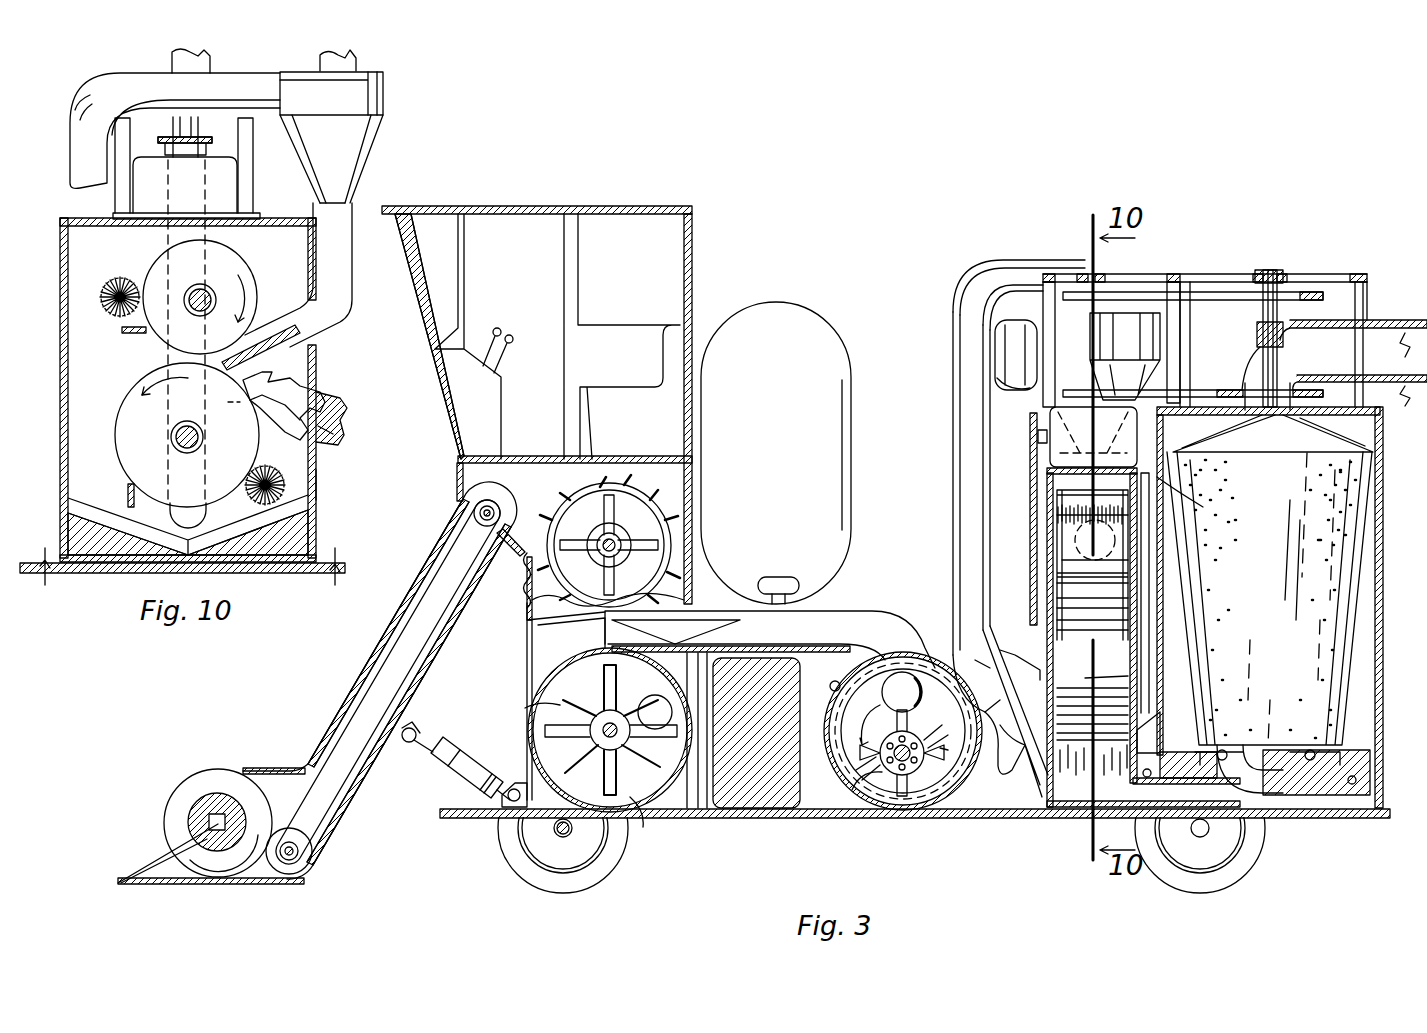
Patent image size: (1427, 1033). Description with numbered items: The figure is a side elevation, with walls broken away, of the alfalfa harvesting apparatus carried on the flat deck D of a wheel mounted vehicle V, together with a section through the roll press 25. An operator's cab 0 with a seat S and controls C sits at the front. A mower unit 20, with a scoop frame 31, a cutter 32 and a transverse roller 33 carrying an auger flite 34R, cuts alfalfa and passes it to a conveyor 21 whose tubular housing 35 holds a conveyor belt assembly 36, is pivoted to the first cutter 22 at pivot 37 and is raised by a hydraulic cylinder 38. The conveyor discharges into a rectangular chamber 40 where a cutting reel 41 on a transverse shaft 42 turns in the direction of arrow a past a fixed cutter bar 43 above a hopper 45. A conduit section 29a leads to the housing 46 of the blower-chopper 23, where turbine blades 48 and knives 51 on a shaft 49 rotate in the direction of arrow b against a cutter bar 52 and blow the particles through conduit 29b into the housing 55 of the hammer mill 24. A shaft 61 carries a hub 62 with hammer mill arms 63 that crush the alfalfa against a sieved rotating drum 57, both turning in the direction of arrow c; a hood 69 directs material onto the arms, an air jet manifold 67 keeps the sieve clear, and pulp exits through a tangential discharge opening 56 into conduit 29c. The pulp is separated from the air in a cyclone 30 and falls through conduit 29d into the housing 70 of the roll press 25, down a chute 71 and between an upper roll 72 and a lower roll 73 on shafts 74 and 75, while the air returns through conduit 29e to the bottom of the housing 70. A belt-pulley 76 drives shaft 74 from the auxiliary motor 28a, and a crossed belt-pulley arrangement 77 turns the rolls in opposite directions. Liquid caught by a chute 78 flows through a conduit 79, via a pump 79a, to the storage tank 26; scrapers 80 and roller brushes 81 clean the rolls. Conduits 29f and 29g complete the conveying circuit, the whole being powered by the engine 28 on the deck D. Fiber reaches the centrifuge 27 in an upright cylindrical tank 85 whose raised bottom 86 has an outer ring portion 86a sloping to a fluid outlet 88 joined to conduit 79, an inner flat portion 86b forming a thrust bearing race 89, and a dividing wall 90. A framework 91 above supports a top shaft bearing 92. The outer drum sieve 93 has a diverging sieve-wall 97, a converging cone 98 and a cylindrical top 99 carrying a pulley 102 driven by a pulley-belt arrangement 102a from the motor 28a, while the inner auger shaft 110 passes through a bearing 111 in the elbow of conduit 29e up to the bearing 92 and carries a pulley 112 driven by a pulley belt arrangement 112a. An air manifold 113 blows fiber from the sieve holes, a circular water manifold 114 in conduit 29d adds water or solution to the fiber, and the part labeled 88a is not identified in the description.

In FIG. 3, the vehicle body 0 is at (650, 206).
In FIG. 3, the lower conveyor housing 20 is at (202, 827).
In FIG. 3, the conveyor 21 is at (380, 680).
In FIG. 3, the rotor compartment 22 is at (701, 484).
In FIG. 3, the blower fan 23 is at (572, 730).
In FIG. 3, the blower 24 is at (891, 749).
In FIG. 10, the duct outlet 25 is at (318, 474).
In FIG. 3, the duct outlet 25 is at (1043, 797).
In FIG. 3, the tank 26 is at (840, 360).
In FIG. 3, the collecting container 27 is at (1316, 574).
In FIG. 3, the engine block 28 is at (765, 800).
In FIG. 10, the housing 28a is at (222, 190).
In FIG. 3, the housing 28a is at (1060, 447).
In FIG. 3, the inlet 29a is at (658, 696).
In FIG. 3, the pipe 29b is at (820, 638).
In FIG. 10, the pipe 29c is at (72, 137).
In FIG. 3, the pipe 29c is at (1005, 352).
In FIG. 10, the pipe 29d is at (335, 290).
In FIG. 10, the pipe outlet 29e is at (170, 57).
In FIG. 3, the pipe outlet 29e is at (960, 306).
In FIG. 3, the elbow pipe 29f is at (1262, 745).
In FIG. 3, the pipe 29g is at (1350, 320).
In FIG. 10, the cyclone separator 30 is at (380, 94).
In FIG. 3, the cyclone separator 30 is at (1120, 335).
In FIG. 3, the bottom plate 31 is at (205, 884).
In FIG. 3, the support struts 32 is at (124, 880).
In FIG. 3, the hub 33 is at (192, 813).
In FIG. 3, the roller 34R is at (190, 790).
In FIG. 3, the conveyor frame 35 is at (395, 638).
In FIG. 3, the frame bend 36 is at (342, 730).
In FIG. 3, the upper pulley 37 is at (480, 510).
In FIG. 3, the hydraulic cylinder 38 is at (462, 772).
In FIG. 3, the rotor 40 is at (643, 534).
In FIG. 3, the rotor blades 41 is at (615, 480).
In FIG. 3, the rotor shaft 42 is at (620, 540).
In FIG. 3, the deflector 43 is at (524, 580).
In FIG. 3, the blower housing 45 is at (560, 632).
In FIG. 3, the cylinder bracket 46 is at (522, 786).
In FIG. 3, the fan blade 48 is at (618, 778).
In FIG. 3, the fan blade 49 is at (590, 736).
In FIG. 3, the fan housing wall 51 is at (535, 722).
In FIG. 3, the fan blade 52 is at (668, 736).
In FIG. 3, the blower inlet 55 is at (860, 667).
In FIG. 3, the blower housing 56 is at (939, 806).
In FIG. 3, the blower casing 57 is at (935, 790).
In FIG. 3, the rotor disc 61 is at (892, 745).
In FIG. 3, the rotor arm 62 is at (940, 755).
In FIG. 3, the vane 63 is at (852, 790).
In FIG. 3, the pivot 67 is at (831, 688).
In FIG. 3, the vane 69 is at (873, 711).
In FIG. 10, the filter box 70 is at (316, 360).
In FIG. 3, the filter box 70 is at (1140, 724).
In FIG. 10, the guide plate 71 is at (258, 352).
In FIG. 10, the upper roller 72 is at (222, 268).
In FIG. 3, the upper roller 72 is at (1057, 540).
In FIG. 10, the lower roller 73 is at (130, 408).
In FIG. 3, the lower roller 73 is at (1092, 661).
In FIG. 10, the roller shaft 74 is at (203, 292).
In FIG. 3, the roller shaft 74 is at (1062, 560).
In FIG. 10, the roller shaft 75 is at (203, 440).
In FIG. 3, the roller shaft 75 is at (1096, 675).
In FIG. 3, the strip 76 is at (1030, 486).
In FIG. 3, the strip 77 is at (1150, 610).
In FIG. 10, the bracket 78 is at (290, 420).
In FIG. 10, the hook 79 is at (342, 418).
In FIG. 3, the hook 79 is at (945, 628).
In FIG. 3, the cap 79a is at (794, 578).
In FIG. 10, the scraper bar 80 is at (130, 333).
In FIG. 3, the scraper bar 80 is at (1055, 600).
In FIG. 10, the brush 81 is at (115, 278).
In FIG. 3, the brush 81 is at (1057, 512).
In FIG. 3, the outer wall 85 is at (1383, 590).
In FIG. 3, the base block 86 is at (1325, 800).
In FIG. 3, the base block part 86a is at (1355, 800).
In FIG. 3, the base block part 86b is at (1285, 798).
In FIG. 3, the pin 88 is at (1358, 778).
In FIG. 3, the bracket 88a is at (1052, 672).
In FIG. 3, the pivot 89 is at (1225, 750).
In FIG. 3, the pivot 90 is at (1345, 752).
In FIG. 10, the column 91 is at (253, 154).
In FIG. 3, the column 91 is at (1350, 280).
In FIG. 3, the flange 92 is at (1282, 270).
In FIG. 3, the bag wall 93 is at (1352, 708).
In FIG. 3, the bag 97 is at (1265, 523).
In FIG. 3, the bag wall 98 is at (1226, 452).
In FIG. 3, the spreader cone 99 is at (1250, 412).
In FIG. 3, the pipe 102 is at (1310, 378).
In FIG. 10, the rod 102a is at (196, 128).
In FIG. 3, the rod 102a is at (1210, 378).
In FIG. 3, the shaft 110 is at (1265, 268).
In FIG. 3, the bearing 111 is at (1257, 333).
In FIG. 3, the flange 112 is at (1298, 292).
In FIG. 3, the rod 112a is at (1200, 296).
In FIG. 3, the hook 113 is at (1200, 496).
In FIG. 3, the pivot 114 is at (1150, 778).
In FIG. 10, the ground D is at (332, 552).
In FIG. 3, the ground D is at (710, 820).
In FIG. 3, the vehicle V is at (473, 848).
In FIG. 3, the controls C is at (508, 362).
In FIG. 3, the seat S is at (643, 385).
In FIG. 3, the direction a is at (541, 525).
In FIG. 3, the direction b is at (560, 712).
In FIG. 3, the direction c is at (957, 751).